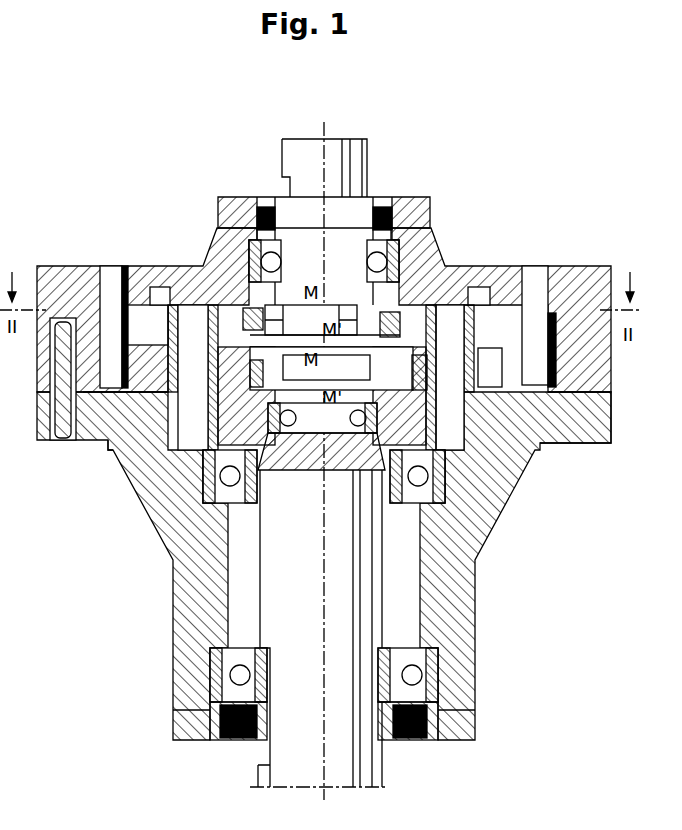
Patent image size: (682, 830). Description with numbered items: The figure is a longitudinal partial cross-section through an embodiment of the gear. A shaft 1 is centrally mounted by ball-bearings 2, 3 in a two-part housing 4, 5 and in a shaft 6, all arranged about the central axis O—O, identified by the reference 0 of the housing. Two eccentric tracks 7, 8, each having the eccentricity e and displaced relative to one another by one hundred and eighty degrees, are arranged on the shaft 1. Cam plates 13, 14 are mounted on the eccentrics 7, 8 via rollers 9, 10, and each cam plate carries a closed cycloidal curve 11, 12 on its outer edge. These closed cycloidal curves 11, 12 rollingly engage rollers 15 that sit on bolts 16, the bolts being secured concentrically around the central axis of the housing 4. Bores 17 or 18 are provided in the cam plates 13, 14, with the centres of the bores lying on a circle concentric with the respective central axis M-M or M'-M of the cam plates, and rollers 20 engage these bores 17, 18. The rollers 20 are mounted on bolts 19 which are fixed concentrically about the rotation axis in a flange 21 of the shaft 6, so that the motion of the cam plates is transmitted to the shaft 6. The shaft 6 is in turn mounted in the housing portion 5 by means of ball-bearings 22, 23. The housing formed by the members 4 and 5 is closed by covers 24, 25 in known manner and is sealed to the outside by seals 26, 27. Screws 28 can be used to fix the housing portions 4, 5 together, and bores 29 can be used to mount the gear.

The central axis O—O 0 is at (317, 460).
The shaft 1 is at (345, 142).
The ball-bearing 2 is at (372, 262).
The ball-bearing 3 is at (321, 595).
The housing part 4 is at (548, 284).
The housing portion 5 is at (467, 552).
The shaft 6 is at (368, 792).
The eccentric track 7 is at (267, 333).
The eccentric track 8 is at (378, 373).
The roller 9 is at (193, 377).
The roller 10 is at (418, 375).
The closed cycloidal curve 11 is at (124, 292).
The closed cycloidal curve 12 is at (145, 405).
The cam plate 13 is at (144, 292).
The cam plate 14 is at (157, 423).
The roller 15 is at (96, 292).
The bolt 16 is at (110, 282).
The bore 17 is at (160, 300).
The bore 18 is at (494, 380).
The bolt 19 is at (445, 320).
The roller 20 is at (462, 313).
The flange 21 is at (489, 449).
The ball-bearing 22 is at (247, 505).
The ball-bearing 23 is at (267, 675).
The cover 24 is at (422, 206).
The cover 25 is at (458, 748).
The seal 26 is at (385, 202).
The seal 27 is at (412, 748).
The screw 28 is at (70, 445).
The bore 29 is at (582, 448).